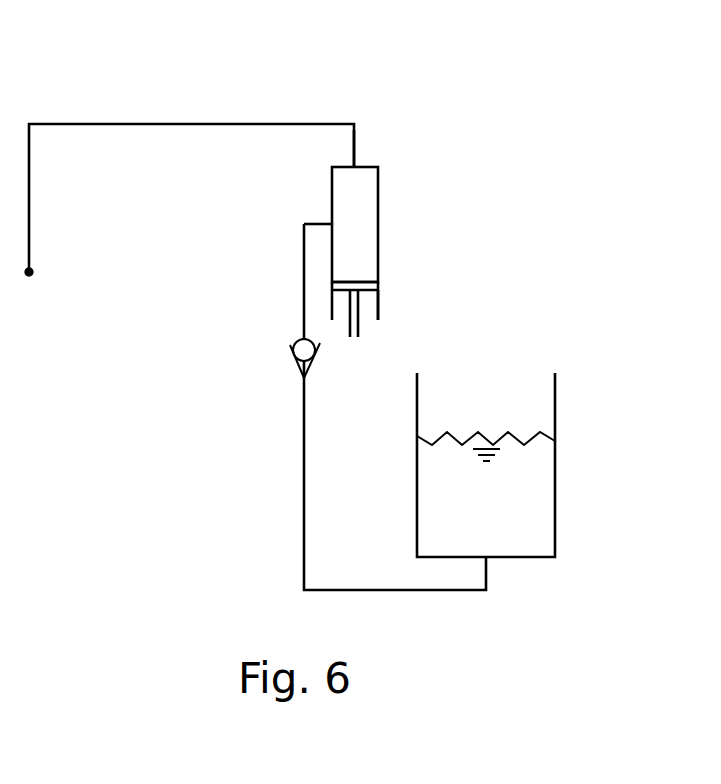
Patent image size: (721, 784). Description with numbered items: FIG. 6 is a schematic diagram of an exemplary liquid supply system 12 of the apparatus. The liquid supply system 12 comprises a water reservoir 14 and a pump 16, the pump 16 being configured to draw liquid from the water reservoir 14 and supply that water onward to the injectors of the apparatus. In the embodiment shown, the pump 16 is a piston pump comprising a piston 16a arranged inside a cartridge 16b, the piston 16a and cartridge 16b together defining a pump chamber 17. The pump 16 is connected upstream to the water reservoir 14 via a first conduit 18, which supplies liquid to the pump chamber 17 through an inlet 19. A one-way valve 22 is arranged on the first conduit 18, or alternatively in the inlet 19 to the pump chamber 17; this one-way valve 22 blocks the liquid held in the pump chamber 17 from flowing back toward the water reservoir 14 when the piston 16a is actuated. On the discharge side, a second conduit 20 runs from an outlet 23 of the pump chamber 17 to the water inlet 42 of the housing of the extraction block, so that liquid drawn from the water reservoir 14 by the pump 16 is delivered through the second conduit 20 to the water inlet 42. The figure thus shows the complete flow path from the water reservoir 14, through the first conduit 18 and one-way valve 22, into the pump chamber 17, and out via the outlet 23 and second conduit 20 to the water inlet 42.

The liquid supply system 12 is at (512, 235).
The water reservoir 14 is at (525, 508).
The pump 16 is at (395, 177).
The piston 16a is at (372, 287).
The cartridge 16b is at (378, 268).
The pump chamber 17 is at (360, 218).
The first conduit 18 is at (304, 488).
The inlet 19 is at (332, 222).
The second conduit 20 is at (146, 123).
The one-way valve 22 is at (290, 346).
The outlet 23 is at (356, 165).
The water inlet 42 is at (30, 288).